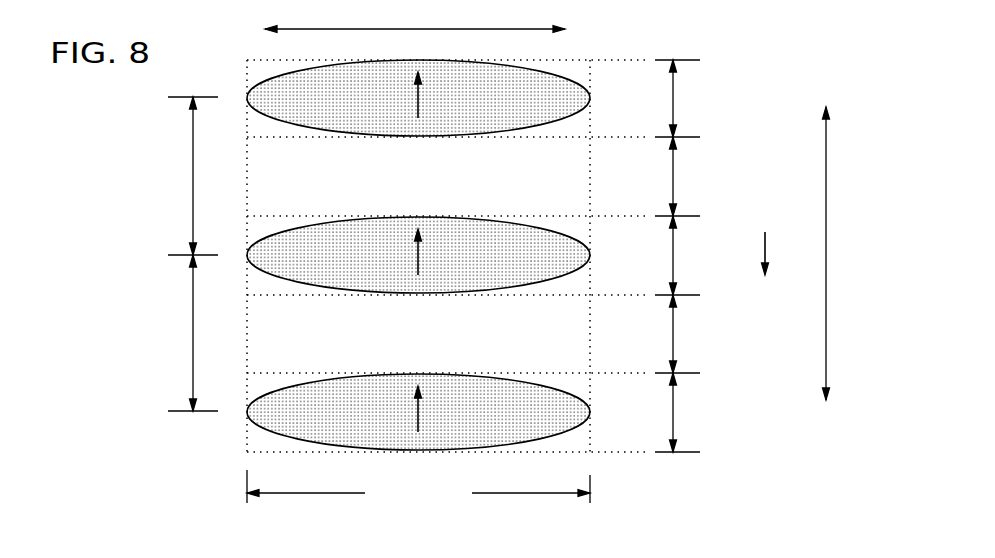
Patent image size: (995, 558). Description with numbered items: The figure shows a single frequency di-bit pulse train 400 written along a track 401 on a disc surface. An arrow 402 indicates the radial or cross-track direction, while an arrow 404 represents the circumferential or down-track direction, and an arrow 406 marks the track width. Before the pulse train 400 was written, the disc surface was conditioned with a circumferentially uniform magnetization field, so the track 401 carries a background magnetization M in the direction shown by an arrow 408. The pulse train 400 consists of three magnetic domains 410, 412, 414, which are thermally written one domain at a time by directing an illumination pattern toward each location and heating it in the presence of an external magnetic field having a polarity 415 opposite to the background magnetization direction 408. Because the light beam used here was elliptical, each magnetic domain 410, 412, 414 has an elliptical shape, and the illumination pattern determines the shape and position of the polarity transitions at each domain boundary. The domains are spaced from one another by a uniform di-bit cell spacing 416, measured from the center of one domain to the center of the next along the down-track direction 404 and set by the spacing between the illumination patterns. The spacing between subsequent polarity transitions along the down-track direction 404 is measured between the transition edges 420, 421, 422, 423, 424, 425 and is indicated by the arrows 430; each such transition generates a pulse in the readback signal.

The single frequency di-bit pulse train 400 is at (690, 43).
The track 401 is at (257, 59).
The cross-track direction arrow 402 is at (503, 27).
The down-track direction arrow 404 is at (827, 180).
The track width arrow 406 is at (530, 497).
The background magnetization direction arrow 408 is at (764, 232).
The magnetic domain 410 is at (552, 375).
The magnetic domain 412 is at (552, 217).
The magnetic domain 414 is at (552, 63).
The external magnetic field polarity 415 is at (418, 108).
The di-bit cell spacing 416 is at (193, 183).
The transition edge 420 is at (416, 452).
The transition edge 421 is at (416, 373).
The transition edge 422 is at (416, 295).
The transition edge 423 is at (416, 216).
The transition edge 424 is at (416, 137).
The transition edge 425 is at (416, 60).
The transition spacing arrows 430 is at (673, 101).